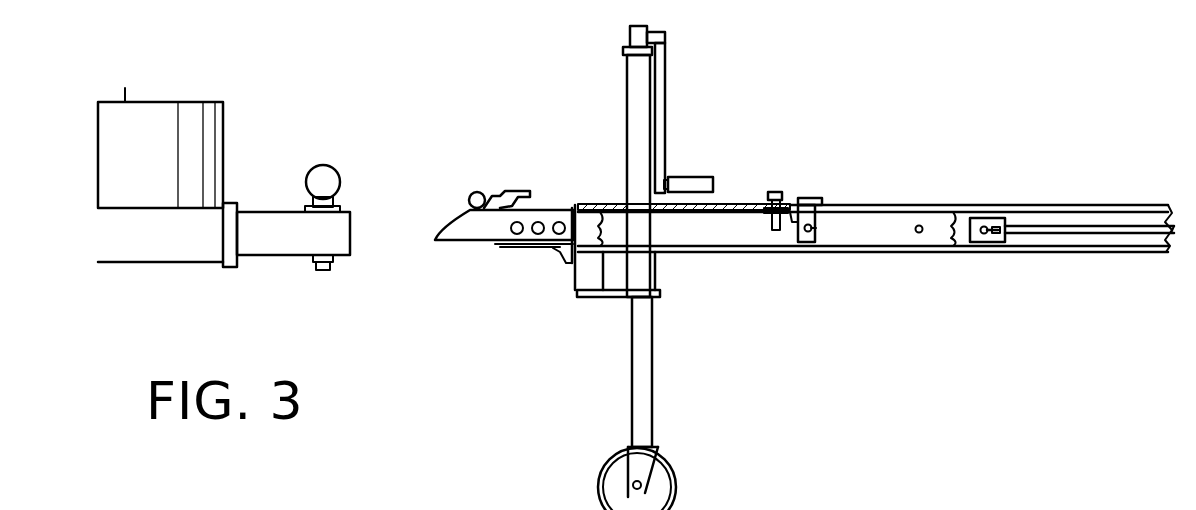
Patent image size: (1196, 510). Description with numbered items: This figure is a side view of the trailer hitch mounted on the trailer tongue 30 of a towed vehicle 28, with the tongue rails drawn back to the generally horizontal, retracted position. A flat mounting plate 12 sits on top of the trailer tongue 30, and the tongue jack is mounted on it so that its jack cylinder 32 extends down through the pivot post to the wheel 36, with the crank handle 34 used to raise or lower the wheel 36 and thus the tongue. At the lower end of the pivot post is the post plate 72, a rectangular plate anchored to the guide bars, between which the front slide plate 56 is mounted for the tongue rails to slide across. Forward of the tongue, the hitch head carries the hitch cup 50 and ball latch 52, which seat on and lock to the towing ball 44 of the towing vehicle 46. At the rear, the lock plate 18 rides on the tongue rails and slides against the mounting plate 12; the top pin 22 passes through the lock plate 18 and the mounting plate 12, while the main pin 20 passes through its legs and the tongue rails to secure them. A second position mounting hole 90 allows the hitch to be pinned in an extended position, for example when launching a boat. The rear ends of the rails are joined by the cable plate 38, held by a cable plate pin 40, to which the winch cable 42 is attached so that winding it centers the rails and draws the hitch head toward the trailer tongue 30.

The mounting plate 12 is at (733, 203).
The lock plate 18 is at (812, 200).
The main pin 20 is at (812, 234).
The top pin 22 is at (776, 192).
The towed vehicle 28 is at (903, 120).
The trailer tongue 30 is at (1037, 216).
The jack cylinder 32 is at (630, 118).
The crank handle 34 is at (700, 180).
The wheel 36 is at (660, 476).
The cable plate 38 is at (1000, 242).
The cable plate pin 40 is at (975, 237).
The winch cable 42 is at (1078, 236).
The towing ball 44 is at (318, 183).
The towing vehicle 46 is at (156, 164).
The hitch cup 50 is at (507, 193).
The ball latch 52 is at (440, 240).
The front slide plate 56 is at (555, 250).
The post plate 72 is at (587, 298).
The second position mounting hole 90 is at (919, 233).